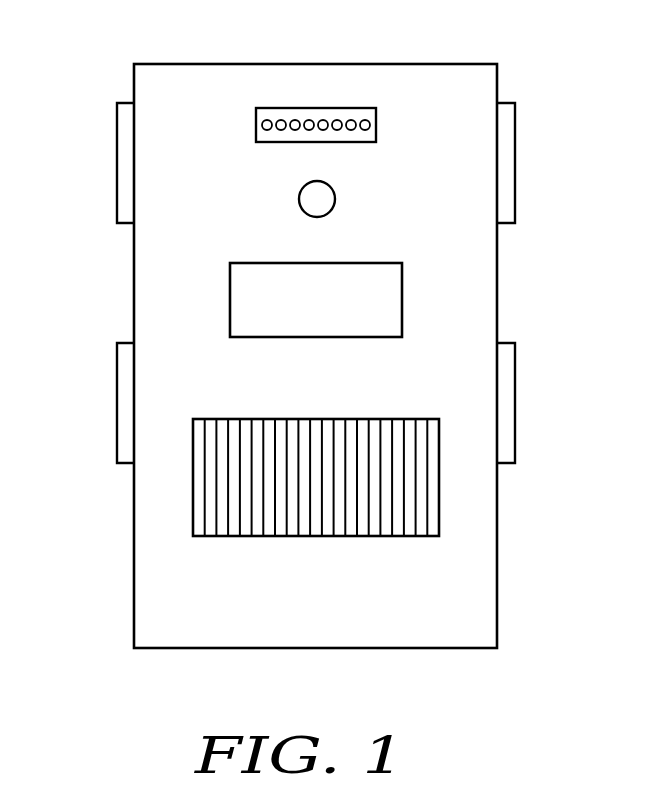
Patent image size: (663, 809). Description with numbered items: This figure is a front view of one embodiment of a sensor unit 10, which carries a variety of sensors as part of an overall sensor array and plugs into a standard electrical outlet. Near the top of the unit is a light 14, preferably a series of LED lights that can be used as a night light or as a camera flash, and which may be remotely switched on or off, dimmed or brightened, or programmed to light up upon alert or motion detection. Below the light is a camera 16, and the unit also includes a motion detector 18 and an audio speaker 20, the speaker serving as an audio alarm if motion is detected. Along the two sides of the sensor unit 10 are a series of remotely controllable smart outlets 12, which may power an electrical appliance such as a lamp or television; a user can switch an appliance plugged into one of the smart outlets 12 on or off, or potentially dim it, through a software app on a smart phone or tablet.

The sensor unit 10 is at (417, 64).
The smart outlet 12 is at (117, 137).
The light 14 is at (325, 108).
The camera 16 is at (298, 198).
The motion detector 18 is at (395, 292).
The audio speaker 20 is at (377, 477).